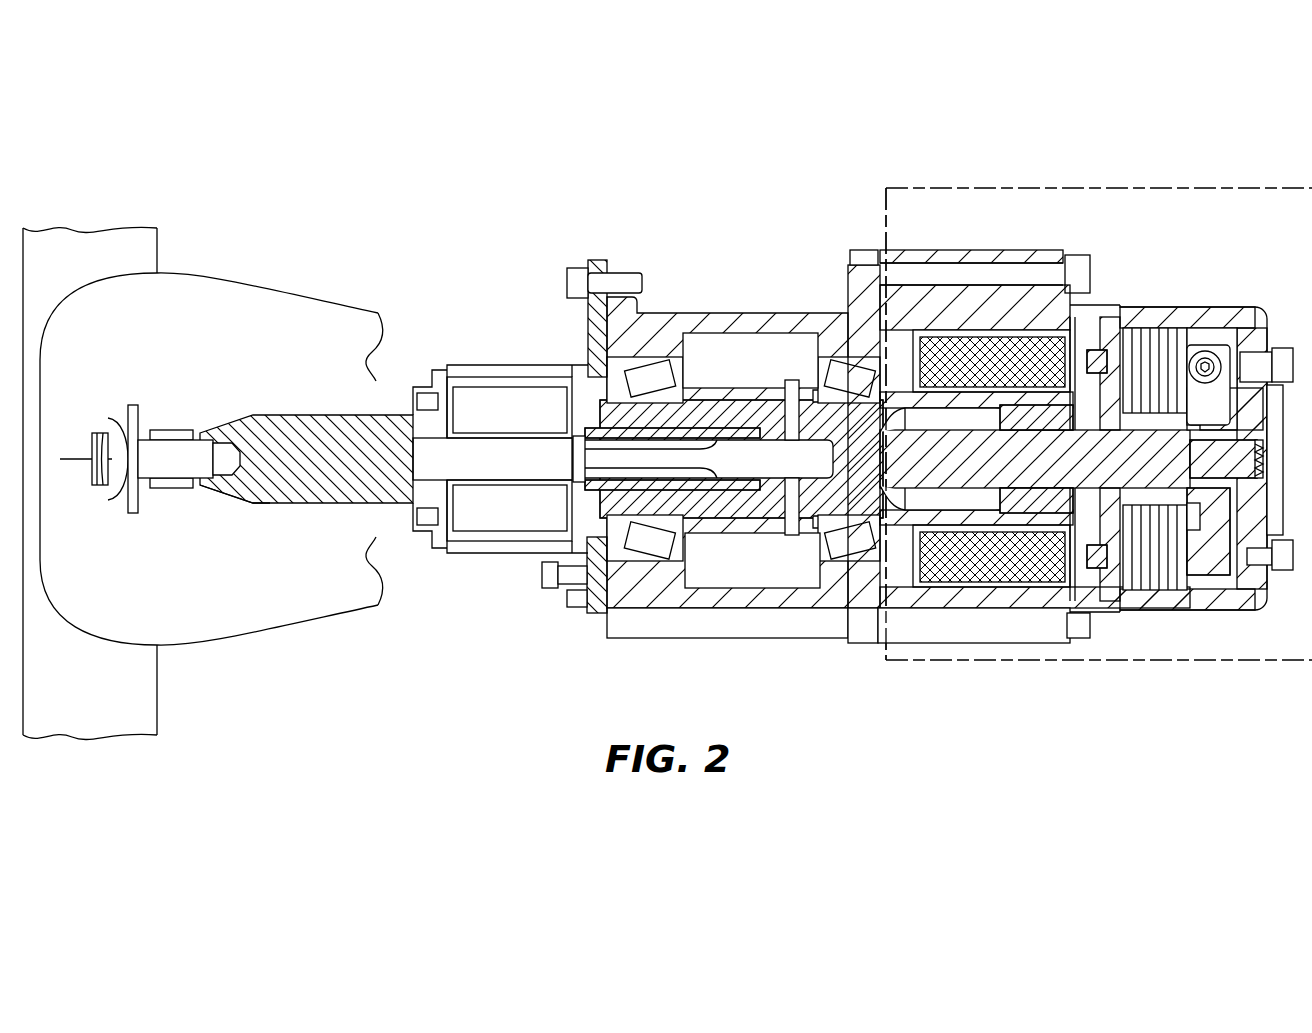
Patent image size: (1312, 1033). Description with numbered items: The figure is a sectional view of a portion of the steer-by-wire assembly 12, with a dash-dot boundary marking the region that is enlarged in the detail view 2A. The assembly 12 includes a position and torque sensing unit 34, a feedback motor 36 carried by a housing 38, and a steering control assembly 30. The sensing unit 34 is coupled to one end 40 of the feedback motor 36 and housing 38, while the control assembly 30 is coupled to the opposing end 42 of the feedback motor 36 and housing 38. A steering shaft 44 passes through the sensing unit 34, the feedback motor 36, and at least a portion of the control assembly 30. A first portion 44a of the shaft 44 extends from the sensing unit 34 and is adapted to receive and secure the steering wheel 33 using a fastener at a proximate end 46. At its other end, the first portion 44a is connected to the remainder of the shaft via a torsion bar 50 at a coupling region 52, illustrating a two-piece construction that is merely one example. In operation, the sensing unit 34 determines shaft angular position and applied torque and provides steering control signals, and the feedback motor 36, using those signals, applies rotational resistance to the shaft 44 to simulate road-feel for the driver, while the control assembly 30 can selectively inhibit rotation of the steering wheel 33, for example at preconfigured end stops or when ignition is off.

The steer-by-wire assembly 12 is at (1070, 440).
The steering control assembly 30 is at (1267, 243).
The steering wheel 33 is at (145, 249).
The position and torque sensing unit 34 is at (500, 459).
The feedback motor 36 is at (743, 460).
The housing 38 is at (738, 312).
The one end 40 is at (614, 266).
The opposing end 42 is at (863, 252).
The steering shaft 44 is at (279, 412).
The first portion 44a is at (262, 506).
The proximate end 46 is at (160, 432).
The torsion bar 50 is at (797, 458).
The coupling region 52 is at (727, 492).
The detail region of FIG. 2A is at (1188, 662).